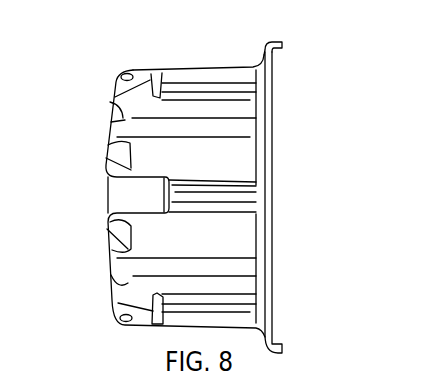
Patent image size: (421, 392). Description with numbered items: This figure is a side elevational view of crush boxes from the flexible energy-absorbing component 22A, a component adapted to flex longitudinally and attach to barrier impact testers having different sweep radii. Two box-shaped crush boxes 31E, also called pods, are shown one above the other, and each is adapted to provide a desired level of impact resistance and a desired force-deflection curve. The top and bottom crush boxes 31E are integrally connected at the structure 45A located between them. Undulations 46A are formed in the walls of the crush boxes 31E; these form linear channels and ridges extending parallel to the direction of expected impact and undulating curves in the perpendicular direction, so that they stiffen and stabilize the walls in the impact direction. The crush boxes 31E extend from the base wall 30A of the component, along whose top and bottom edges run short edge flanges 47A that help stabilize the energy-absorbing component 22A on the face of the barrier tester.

The energy-absorbing component 22A is at (124, 53).
The crush box 31E is at (98, 118).
The undulations 46A is at (183, 123).
The structure 45A is at (160, 190).
The side wall 30A is at (274, 125).
The edge flange 47A is at (283, 38).